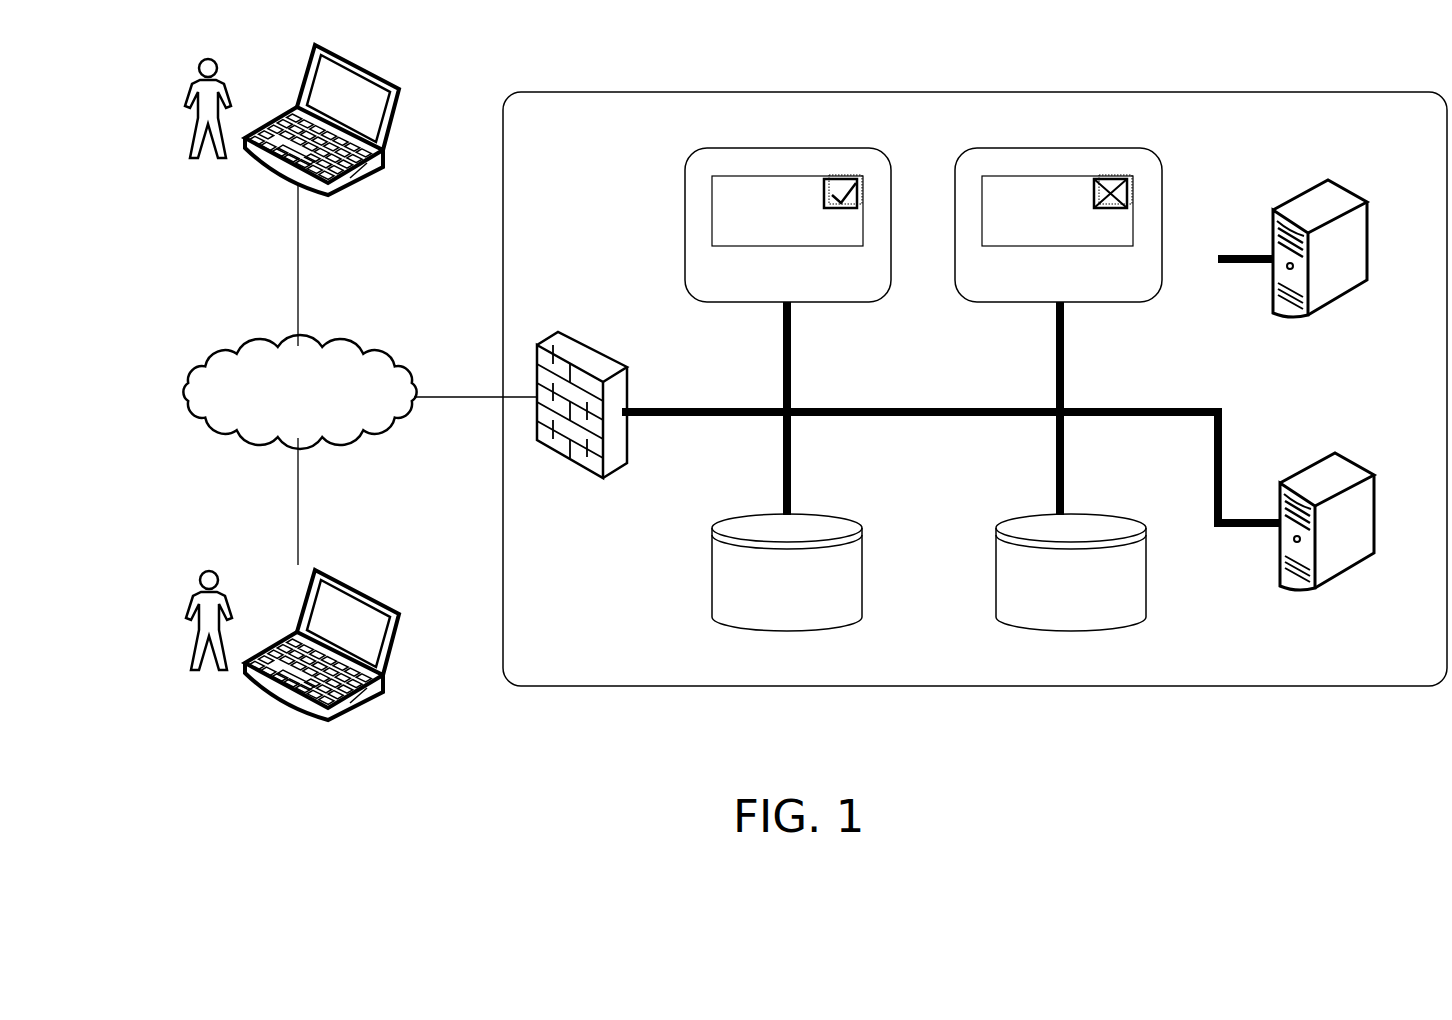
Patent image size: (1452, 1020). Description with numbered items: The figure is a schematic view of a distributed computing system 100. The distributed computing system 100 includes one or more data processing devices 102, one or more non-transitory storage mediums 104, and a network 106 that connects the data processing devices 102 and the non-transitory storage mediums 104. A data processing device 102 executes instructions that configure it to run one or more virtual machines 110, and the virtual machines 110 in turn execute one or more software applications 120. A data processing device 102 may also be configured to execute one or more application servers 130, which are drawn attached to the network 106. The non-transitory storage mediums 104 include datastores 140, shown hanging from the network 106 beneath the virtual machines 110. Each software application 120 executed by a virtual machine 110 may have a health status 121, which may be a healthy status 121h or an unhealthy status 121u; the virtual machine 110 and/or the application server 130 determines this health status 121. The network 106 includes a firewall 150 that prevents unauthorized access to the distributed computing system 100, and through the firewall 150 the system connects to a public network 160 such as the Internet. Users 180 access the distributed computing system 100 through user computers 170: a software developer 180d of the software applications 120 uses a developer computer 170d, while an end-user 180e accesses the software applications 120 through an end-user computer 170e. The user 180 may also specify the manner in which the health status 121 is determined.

The distributed computing system 100 is at (975, 389).
The data processing device 102 is at (1064, 399).
The non-transitory storage medium 104 is at (954, 590).
The network 106 is at (898, 418).
The virtual machine 110 is at (954, 242).
The software application 120 is at (968, 196).
The health status 121 is at (1024, 177).
The healthy status 121h is at (858, 193).
The unhealthy status 121u is at (1128, 193).
The application server 130 is at (1316, 186).
The datastore 140 is at (797, 630).
The firewall 150 is at (582, 442).
The public network 160 is at (299, 392).
The user computer 170 is at (354, 378).
The developer computer 170d is at (372, 62).
The end-user computer 170e is at (372, 590).
The user 180 is at (177, 364).
The software developer 180d is at (194, 112).
The end-user 180e is at (194, 624).